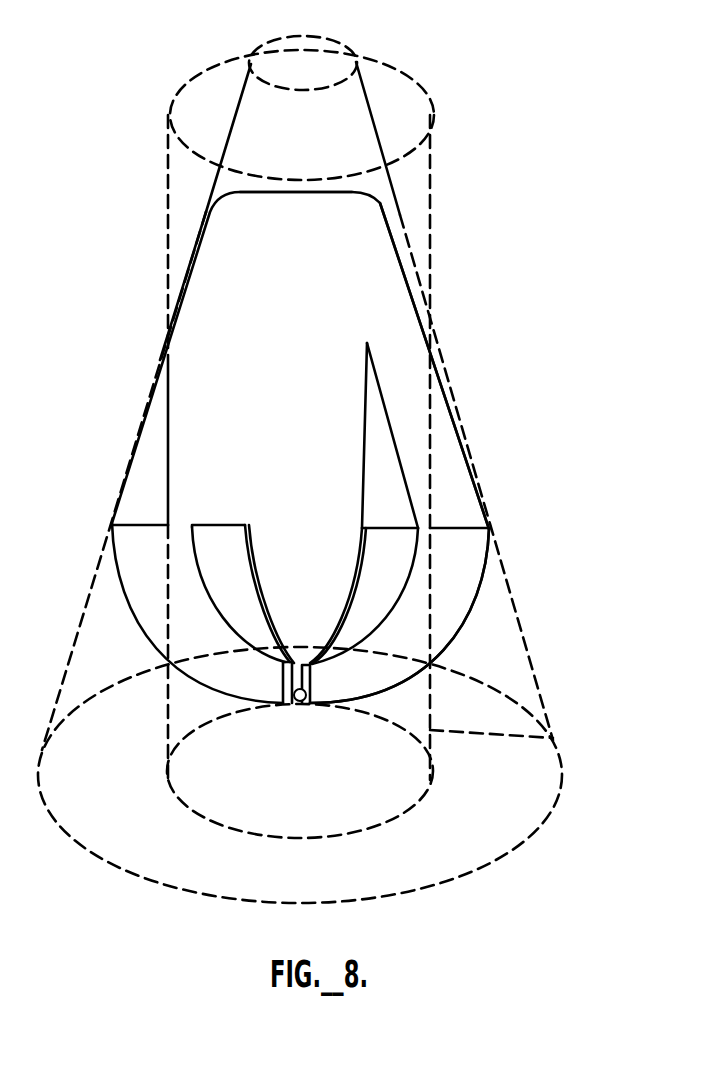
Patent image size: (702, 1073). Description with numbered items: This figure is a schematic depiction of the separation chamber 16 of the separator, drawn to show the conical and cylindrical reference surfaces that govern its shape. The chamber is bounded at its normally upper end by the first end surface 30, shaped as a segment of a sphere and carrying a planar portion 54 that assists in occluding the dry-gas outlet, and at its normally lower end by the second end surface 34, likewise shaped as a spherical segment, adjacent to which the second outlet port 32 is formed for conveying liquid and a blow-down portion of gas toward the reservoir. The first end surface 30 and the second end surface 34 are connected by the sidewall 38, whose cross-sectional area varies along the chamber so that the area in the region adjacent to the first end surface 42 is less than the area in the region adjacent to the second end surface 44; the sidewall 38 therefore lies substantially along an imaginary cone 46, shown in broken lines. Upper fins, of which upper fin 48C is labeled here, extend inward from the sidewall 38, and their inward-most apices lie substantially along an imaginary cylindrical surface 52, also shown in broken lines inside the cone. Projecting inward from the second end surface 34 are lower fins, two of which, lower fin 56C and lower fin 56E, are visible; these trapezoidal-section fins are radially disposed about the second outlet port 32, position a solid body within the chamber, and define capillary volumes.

The separation chamber 16 is at (142, 416).
The first end surface 30 is at (395, 206).
The second outlet port 32 is at (303, 703).
The second end surface 34 is at (420, 688).
The sidewall 38 is at (460, 426).
The region adjacent to the first end surface 42 is at (167, 337).
The region adjacent to the second end surface 44 is at (499, 572).
The imaginary cone 46 is at (537, 706).
The upper fin 48C is at (143, 473).
The imaginary cylindrical surface 52 is at (552, 737).
The planar portion 54 is at (343, 195).
The lower fin 56C is at (138, 570).
The lower fin 56E is at (492, 533).